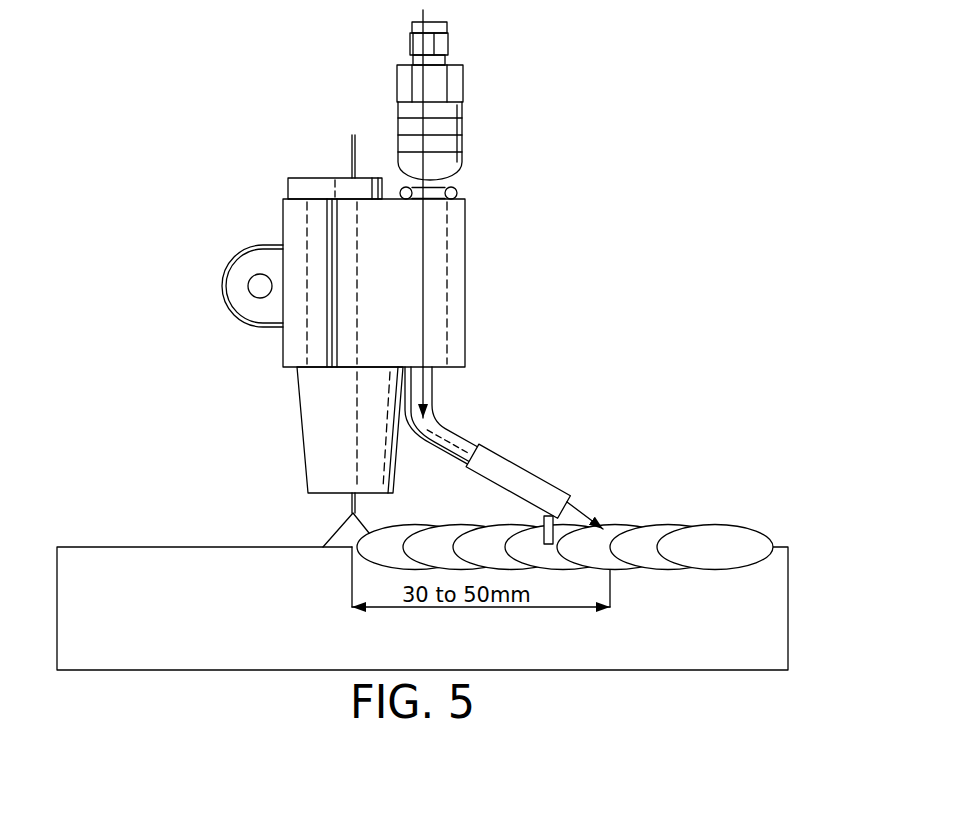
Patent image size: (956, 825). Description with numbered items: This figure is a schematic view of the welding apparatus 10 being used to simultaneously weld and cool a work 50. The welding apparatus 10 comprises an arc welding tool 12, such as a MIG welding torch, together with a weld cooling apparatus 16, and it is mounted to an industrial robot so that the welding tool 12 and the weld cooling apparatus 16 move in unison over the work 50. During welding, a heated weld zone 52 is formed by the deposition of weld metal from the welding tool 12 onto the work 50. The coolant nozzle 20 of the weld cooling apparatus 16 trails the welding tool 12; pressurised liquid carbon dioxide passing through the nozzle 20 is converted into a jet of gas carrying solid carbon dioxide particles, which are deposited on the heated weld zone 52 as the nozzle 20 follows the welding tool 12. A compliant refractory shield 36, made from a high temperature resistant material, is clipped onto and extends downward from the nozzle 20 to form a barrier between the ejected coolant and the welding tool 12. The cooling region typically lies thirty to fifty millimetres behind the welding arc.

The welding apparatus 10 is at (277, 173).
The arc welding tool 12 is at (299, 426).
The weld cooling apparatus 16 is at (488, 171).
The coolant nozzle 20 is at (532, 463).
The refractory shield 36 is at (543, 521).
The work 50 is at (110, 652).
The heated weld zone 52 is at (647, 545).